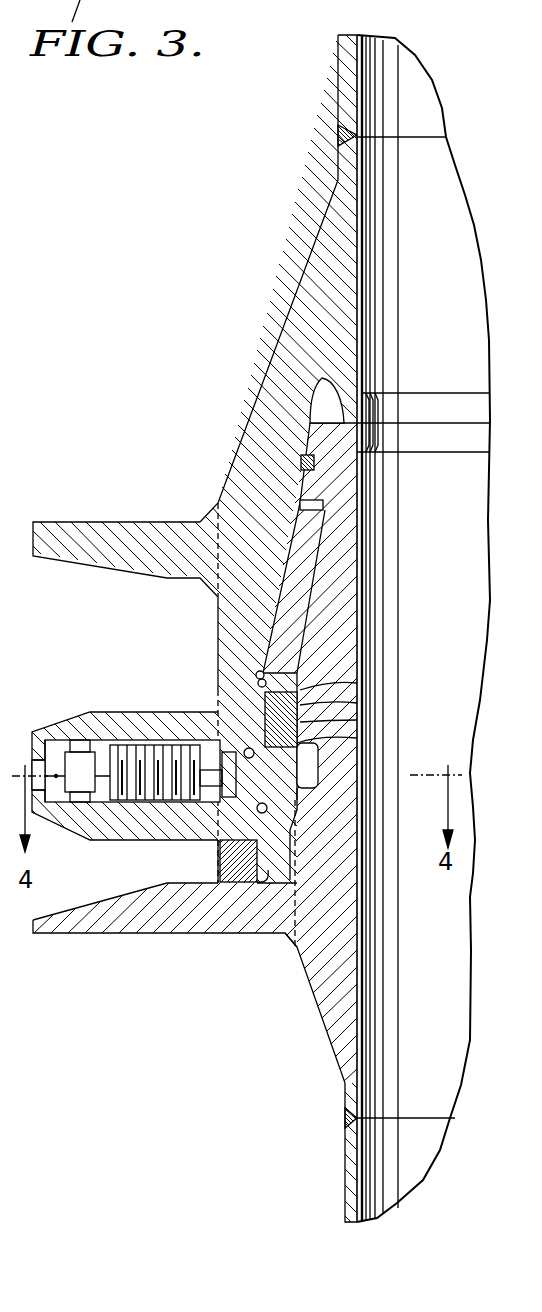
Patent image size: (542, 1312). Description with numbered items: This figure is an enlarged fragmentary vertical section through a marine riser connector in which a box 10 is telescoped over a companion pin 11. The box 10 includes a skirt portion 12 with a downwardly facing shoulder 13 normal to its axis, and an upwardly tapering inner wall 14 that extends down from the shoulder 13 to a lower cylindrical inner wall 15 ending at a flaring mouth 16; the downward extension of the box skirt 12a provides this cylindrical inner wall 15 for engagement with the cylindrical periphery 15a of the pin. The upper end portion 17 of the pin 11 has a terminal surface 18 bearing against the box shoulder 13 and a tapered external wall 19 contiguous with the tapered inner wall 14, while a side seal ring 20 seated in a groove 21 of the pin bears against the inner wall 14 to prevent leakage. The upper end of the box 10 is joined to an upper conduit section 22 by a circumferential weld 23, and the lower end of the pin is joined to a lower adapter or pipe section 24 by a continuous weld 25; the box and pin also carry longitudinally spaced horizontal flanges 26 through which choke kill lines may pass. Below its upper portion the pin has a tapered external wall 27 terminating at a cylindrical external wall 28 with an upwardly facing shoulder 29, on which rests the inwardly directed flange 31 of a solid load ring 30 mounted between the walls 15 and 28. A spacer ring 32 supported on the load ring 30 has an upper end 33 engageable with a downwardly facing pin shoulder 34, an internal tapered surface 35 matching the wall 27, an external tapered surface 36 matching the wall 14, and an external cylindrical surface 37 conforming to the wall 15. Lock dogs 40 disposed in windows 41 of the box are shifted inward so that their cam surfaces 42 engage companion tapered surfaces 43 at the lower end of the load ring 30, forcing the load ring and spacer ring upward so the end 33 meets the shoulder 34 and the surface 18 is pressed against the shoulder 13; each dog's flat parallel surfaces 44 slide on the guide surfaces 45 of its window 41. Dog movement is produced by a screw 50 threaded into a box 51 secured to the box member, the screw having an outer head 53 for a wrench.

The box 10 is at (216, 462).
The pin 11 is at (298, 993).
The skirt portion 12 is at (230, 628).
The box skirt 12a is at (200, 893).
The downwardly facing shoulder 13 is at (330, 400).
The upwardly tapering inner wall 14 is at (295, 545).
The lower cylindrical inner wall 15 is at (240, 868).
The cylindrical periphery 15a is at (228, 883).
The flaring mouth 16 is at (266, 888).
The upper end portion 17 is at (340, 473).
The terminal surface 18 is at (375, 392).
The tapered external wall 19 is at (306, 425).
The side seal ring 20 is at (302, 464).
The groove 21 is at (365, 432).
The upper conduit section 22 is at (340, 92).
The weld 23 is at (338, 134).
The lower adapter or pipe section 24 is at (345, 1178).
The weld 25 is at (345, 1118).
The horizontal flanges 26 is at (100, 522).
The tapered external wall 27 is at (310, 585).
The cylindrical external wall 28 is at (300, 722).
The upwardly facing shoulder 29 is at (300, 703).
The load ring 30 is at (260, 685).
The inwardly directed flange 31 is at (305, 685).
The spacer ring 32 is at (310, 560).
The upper end 33 is at (290, 516).
The downwardly facing pin shoulder 34 is at (315, 497).
The internal tapered surface 35 is at (310, 630).
The external tapered surface 36 is at (272, 597).
The external cylindrical surface 37 is at (264, 672).
The lock members or dogs 40 is at (280, 790).
The openings or windows 41 is at (142, 838).
The upper tapered or cam surfaces 42 is at (305, 740).
The tapered surfaces 43 is at (314, 766).
The top and bottom flat parallel surfaces 44 is at (230, 752).
The top and bottom guide surfaces 45 is at (252, 748).
The screw 50 is at (152, 752).
The box 51 is at (115, 822).
The outer head 53 is at (85, 752).